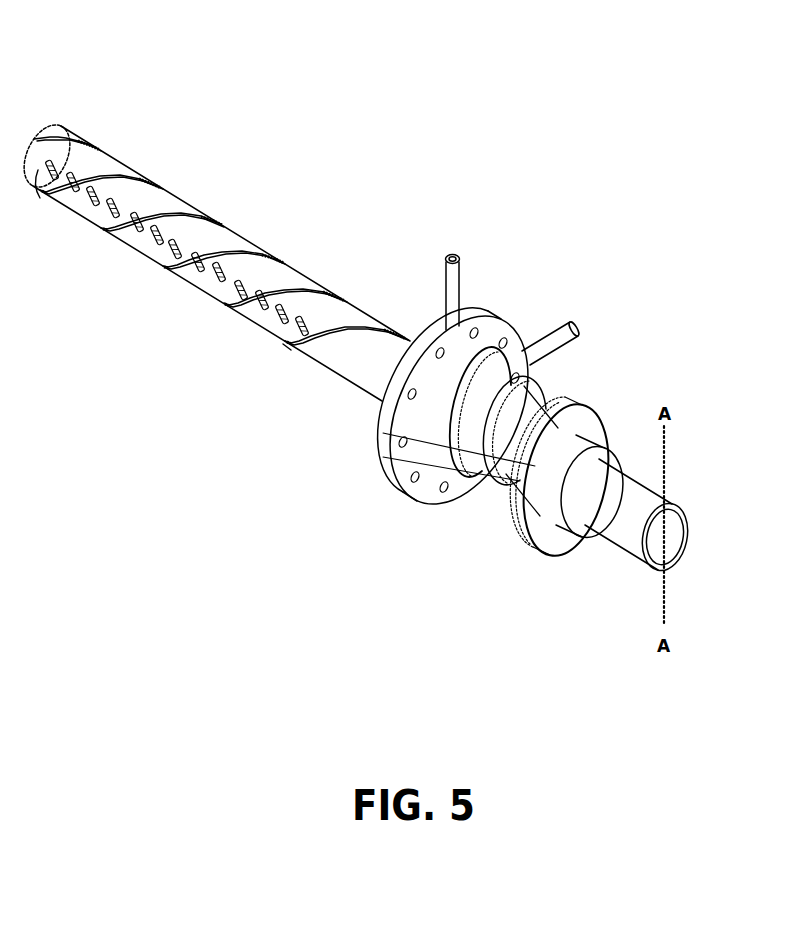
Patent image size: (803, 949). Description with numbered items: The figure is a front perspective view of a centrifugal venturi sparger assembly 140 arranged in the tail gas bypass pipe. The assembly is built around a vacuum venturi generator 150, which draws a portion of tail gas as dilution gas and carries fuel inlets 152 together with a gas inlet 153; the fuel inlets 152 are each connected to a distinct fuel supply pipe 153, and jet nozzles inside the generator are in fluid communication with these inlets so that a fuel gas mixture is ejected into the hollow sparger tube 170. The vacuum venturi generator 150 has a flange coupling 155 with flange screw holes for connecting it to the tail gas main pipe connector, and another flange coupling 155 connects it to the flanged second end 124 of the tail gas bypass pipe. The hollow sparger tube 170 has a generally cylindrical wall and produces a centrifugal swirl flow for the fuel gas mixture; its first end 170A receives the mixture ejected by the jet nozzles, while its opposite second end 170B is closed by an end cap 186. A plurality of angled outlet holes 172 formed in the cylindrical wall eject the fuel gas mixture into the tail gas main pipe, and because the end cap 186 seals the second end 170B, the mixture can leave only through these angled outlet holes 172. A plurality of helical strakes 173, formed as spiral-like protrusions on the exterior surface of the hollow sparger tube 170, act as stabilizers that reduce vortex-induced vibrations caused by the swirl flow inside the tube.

The second end of the tail gas bypass pipe 124 is at (613, 423).
The centrifugal venturi sparger assembly 140 is at (265, 238).
The vacuum venturi generator 150 is at (516, 460).
The fuel inlet 152 is at (443, 323).
The gas inlet 153 is at (457, 267).
The flange coupling 155 is at (436, 482).
The hollow sparger tube 170 is at (221, 218).
The first end of the hollow sparger tube 170A is at (408, 333).
The second end of the hollow sparger tube 170B is at (63, 135).
The angled outlet holes 172 is at (302, 328).
The helical strakes 173 is at (221, 210).
The end cap 186 is at (41, 178).